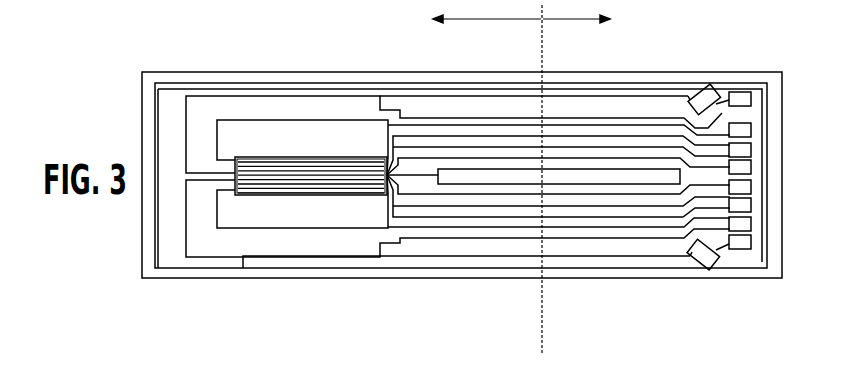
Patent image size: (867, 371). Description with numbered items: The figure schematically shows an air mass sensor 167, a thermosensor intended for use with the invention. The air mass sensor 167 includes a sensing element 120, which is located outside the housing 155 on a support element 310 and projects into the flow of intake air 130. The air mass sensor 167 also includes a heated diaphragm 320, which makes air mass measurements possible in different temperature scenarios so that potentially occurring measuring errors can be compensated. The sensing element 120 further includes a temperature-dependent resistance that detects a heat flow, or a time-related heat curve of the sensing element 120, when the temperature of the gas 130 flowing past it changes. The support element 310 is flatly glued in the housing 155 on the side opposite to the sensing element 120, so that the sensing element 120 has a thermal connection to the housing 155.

The air mass sensor 167 is at (120, 52).
The support element 310 is at (247, 81).
The heated diaphragm 320 is at (283, 182).
The sensing element 120 is at (343, 270).
The flow of intake air 130 is at (503, 58).
The housing 155 is at (598, 58).